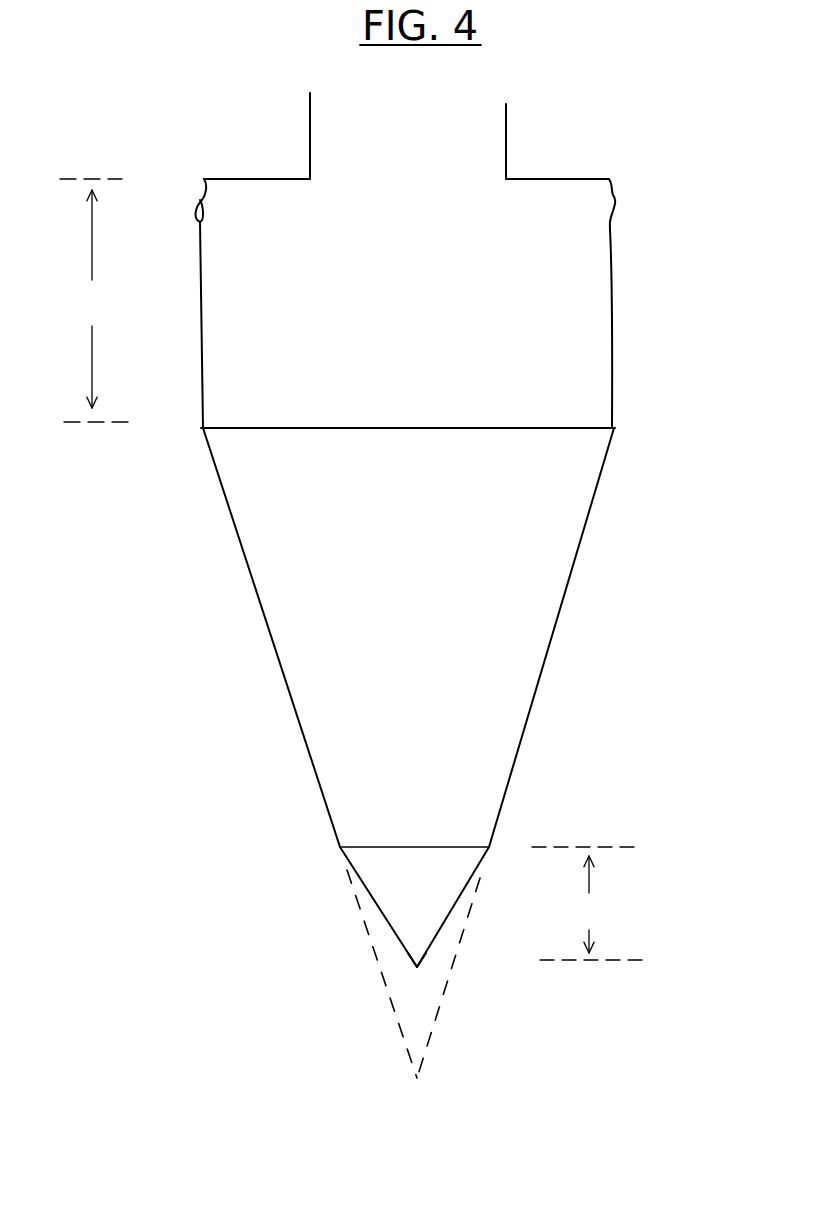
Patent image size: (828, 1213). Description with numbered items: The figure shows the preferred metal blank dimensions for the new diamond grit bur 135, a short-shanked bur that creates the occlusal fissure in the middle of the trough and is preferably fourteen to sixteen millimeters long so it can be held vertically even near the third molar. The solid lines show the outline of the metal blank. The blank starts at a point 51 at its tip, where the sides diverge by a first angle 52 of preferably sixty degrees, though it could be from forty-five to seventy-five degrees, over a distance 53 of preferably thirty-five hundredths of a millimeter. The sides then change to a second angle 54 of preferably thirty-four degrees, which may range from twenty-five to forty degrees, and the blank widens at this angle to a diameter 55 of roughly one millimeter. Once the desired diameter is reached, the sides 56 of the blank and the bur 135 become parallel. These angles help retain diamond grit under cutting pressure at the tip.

The diamond grit bur 135 is at (222, 625).
The diameter 55 is at (410, 396).
The first angle 52 is at (419, 933).
The point 51 is at (415, 972).
The second angle 54 is at (412, 1045).
The sides 56 is at (95, 300).
The distance 53 is at (590, 903).